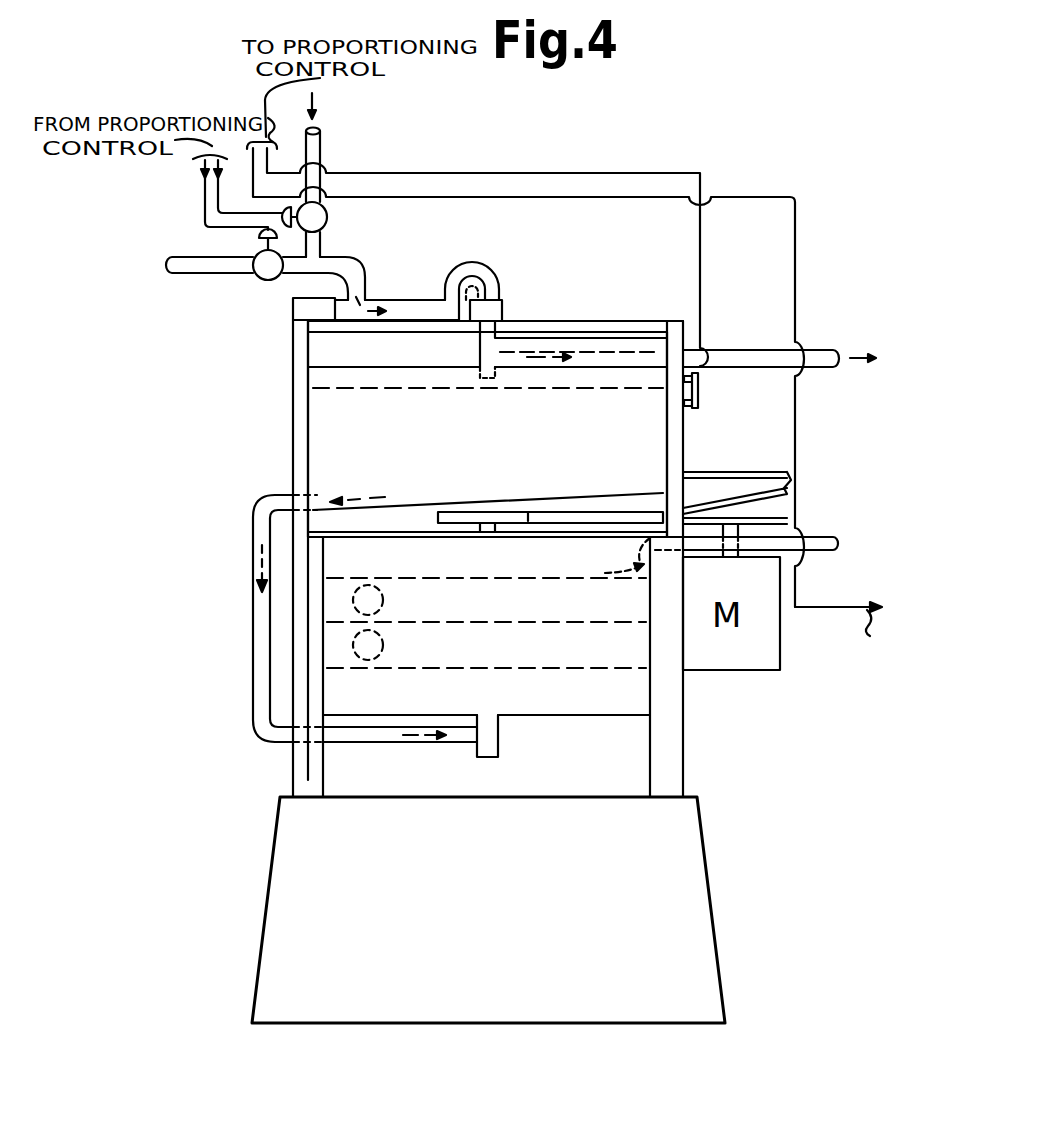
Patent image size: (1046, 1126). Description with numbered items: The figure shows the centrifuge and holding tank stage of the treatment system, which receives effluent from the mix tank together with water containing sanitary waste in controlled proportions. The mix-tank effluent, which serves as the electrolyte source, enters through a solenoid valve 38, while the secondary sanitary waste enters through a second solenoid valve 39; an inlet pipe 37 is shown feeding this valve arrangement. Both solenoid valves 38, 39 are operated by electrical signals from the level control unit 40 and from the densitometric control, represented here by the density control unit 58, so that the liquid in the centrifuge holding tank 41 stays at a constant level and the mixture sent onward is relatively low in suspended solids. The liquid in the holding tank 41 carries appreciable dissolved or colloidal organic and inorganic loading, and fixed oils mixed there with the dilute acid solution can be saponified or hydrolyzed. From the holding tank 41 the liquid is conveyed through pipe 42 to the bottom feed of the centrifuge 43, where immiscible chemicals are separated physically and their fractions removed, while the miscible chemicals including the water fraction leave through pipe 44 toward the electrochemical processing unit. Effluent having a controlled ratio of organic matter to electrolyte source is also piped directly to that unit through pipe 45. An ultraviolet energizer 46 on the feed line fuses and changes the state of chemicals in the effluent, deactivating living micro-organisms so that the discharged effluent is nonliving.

The inlet pipe 37 is at (188, 268).
The solenoid valve 38 is at (278, 281).
The solenoid valve 39 is at (327, 217).
The level control unit 40 is at (700, 391).
The centrifuge holding tank 41 is at (446, 443).
The pipe 42 is at (258, 618).
The centrifuge 43 is at (314, 633).
The pipe 44 is at (818, 540).
The pipe 45 is at (757, 356).
The ultraviolet energizer 46 is at (485, 262).
The density control unit 58 is at (853, 659).